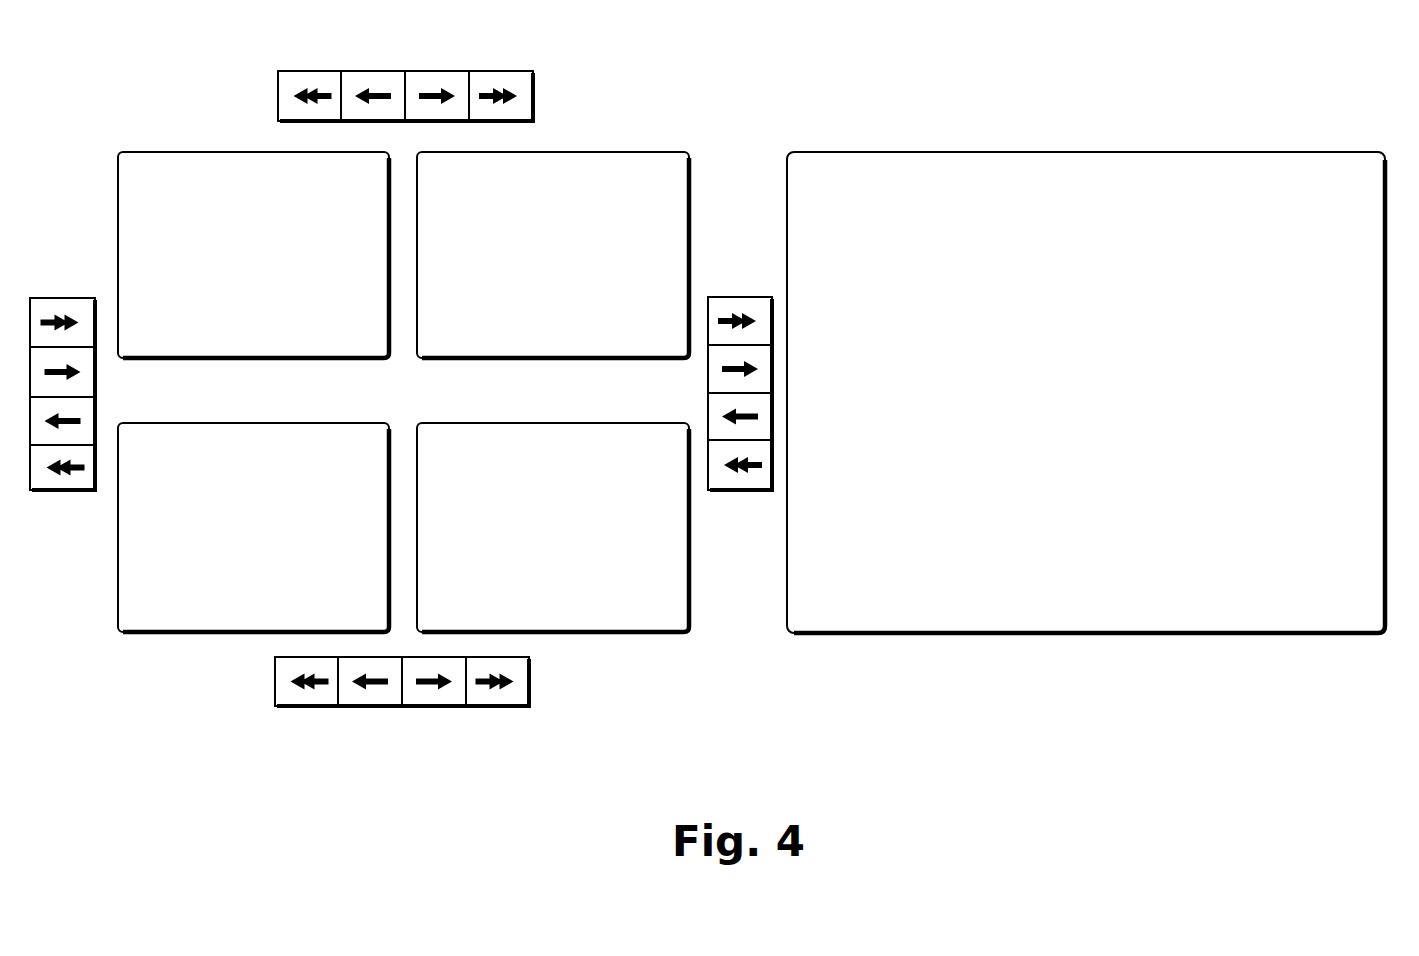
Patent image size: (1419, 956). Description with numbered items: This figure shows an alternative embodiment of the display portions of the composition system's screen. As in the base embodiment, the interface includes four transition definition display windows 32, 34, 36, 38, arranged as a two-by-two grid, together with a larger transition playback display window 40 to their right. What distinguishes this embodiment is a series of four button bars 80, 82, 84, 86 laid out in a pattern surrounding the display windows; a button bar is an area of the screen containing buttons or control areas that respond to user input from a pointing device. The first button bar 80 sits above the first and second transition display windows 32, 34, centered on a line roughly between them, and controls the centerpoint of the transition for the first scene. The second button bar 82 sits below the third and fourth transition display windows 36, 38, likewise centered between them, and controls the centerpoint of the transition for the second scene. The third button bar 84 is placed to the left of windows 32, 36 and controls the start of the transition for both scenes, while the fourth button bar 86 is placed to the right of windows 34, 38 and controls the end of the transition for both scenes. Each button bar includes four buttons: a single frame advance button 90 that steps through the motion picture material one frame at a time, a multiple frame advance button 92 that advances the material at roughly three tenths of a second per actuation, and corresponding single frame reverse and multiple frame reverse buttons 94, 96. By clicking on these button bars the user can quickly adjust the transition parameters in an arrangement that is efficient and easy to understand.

The transition definition display window 32 is at (152, 152).
The transition definition display window 34 is at (620, 152).
The transition definition display window 36 is at (253, 423).
The transition definition display window 38 is at (557, 423).
The transition playback display window 40 is at (865, 152).
The first button bar 80 is at (358, 71).
The second button bar 82 is at (427, 704).
The third button bar 84 is at (67, 298).
The fourth button bar 86 is at (739, 297).
The single frame advance button 90 is at (412, 707).
The multiple frame advance button 92 is at (476, 707).
The single frame reverse button 94 is at (360, 707).
The multiple frame reverse button 96 is at (300, 707).